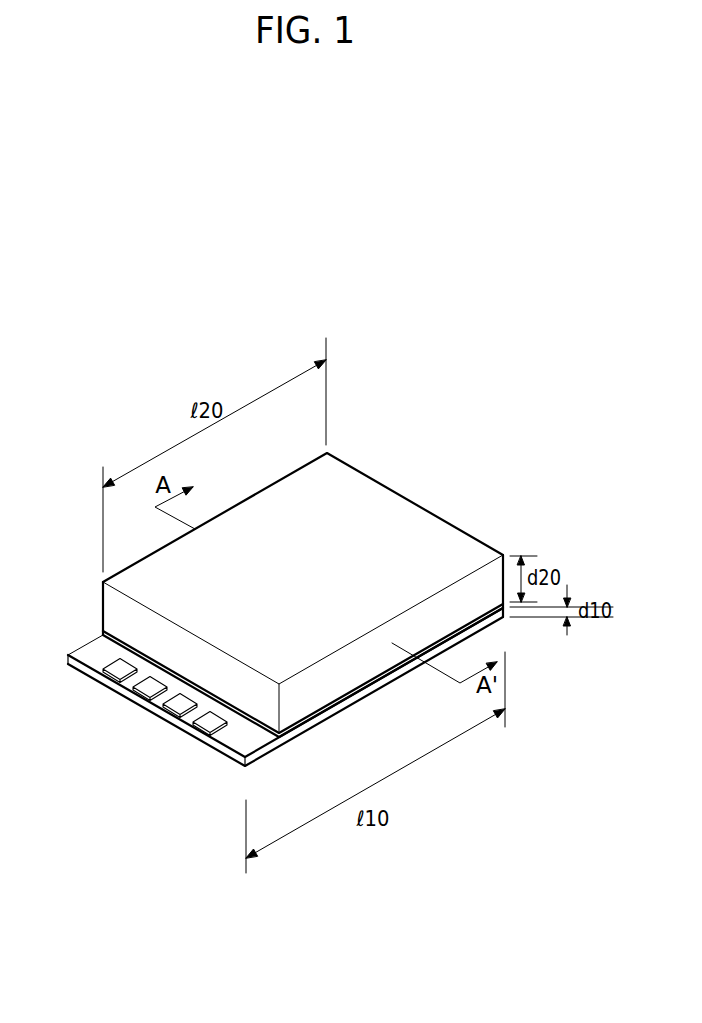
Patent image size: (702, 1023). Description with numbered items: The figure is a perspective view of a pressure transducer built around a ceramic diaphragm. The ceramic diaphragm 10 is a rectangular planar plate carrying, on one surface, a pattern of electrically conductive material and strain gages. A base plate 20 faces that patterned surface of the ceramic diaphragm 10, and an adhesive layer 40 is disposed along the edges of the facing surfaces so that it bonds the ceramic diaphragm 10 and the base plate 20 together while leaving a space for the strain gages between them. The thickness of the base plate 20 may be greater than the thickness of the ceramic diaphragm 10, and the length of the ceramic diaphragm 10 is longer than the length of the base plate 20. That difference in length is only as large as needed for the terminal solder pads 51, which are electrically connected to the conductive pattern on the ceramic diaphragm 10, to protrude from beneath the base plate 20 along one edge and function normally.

The ceramic diaphragm 10 is at (68, 656).
The base plate 20 is at (395, 498).
The adhesive layer 40 is at (100, 631).
The terminal solder pads 51 is at (147, 689).